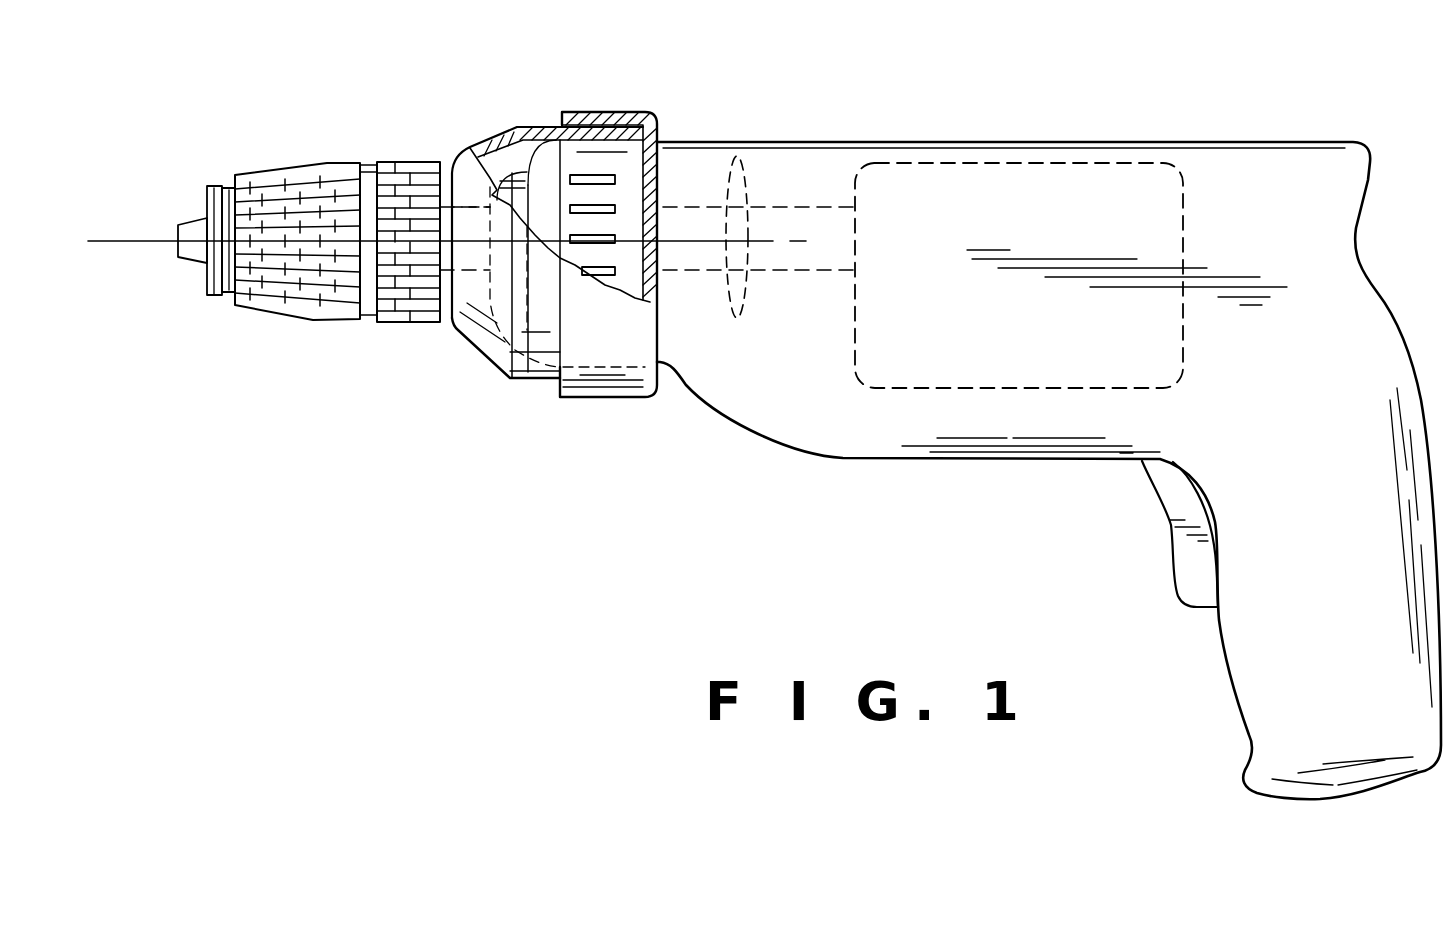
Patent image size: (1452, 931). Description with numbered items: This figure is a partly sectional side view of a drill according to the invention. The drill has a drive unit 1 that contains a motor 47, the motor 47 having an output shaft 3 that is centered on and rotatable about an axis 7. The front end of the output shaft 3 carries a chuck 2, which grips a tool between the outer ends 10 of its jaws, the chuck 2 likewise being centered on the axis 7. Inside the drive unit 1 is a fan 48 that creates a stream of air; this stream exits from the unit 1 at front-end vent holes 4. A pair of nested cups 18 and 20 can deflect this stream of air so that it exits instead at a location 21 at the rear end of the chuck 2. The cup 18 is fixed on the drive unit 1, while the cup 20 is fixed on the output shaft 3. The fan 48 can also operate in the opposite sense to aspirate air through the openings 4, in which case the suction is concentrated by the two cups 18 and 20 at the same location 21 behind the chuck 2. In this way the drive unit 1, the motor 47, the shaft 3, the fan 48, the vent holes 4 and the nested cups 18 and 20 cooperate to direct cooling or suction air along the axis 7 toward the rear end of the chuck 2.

The drive unit 1 is at (1145, 142).
The chuck 2 is at (310, 178).
The output shaft 3 is at (466, 205).
The front-end vent holes 4 is at (592, 177).
The axis 7 is at (138, 240).
The outer ends of the jaws 10 is at (193, 218).
The cup 18 is at (593, 380).
The cup 20 is at (488, 365).
The location at rear end of chuck 21 is at (443, 323).
The motor 47 is at (978, 200).
The fan 48 is at (750, 143).